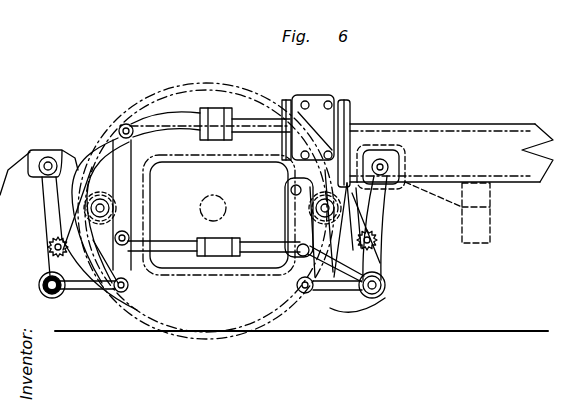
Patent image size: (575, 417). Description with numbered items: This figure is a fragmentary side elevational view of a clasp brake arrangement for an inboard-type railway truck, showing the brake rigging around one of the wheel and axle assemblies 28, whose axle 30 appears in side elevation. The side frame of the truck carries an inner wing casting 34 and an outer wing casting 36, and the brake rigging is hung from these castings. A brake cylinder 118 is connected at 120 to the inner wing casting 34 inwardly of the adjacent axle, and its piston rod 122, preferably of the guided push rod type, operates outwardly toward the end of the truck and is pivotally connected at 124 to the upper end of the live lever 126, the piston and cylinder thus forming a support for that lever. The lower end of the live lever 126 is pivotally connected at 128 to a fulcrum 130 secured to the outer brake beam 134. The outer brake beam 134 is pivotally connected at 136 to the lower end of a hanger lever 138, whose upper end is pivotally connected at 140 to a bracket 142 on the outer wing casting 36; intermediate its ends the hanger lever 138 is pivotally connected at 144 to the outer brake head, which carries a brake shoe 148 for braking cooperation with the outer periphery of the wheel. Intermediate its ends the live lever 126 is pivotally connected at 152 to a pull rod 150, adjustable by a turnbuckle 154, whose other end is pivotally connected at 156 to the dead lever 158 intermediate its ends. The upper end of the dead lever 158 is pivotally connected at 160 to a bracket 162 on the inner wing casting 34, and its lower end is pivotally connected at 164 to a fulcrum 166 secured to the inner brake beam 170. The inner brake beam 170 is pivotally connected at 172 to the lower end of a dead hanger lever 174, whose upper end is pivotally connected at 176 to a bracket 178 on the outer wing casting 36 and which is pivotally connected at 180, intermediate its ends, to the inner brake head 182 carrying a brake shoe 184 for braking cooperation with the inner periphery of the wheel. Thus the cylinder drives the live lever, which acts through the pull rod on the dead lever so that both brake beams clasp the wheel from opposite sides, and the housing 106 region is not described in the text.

The wheel and axle assembly 28 is at (212, 325).
The axle 30 is at (201, 201).
The inner wing casting 34 is at (192, 112).
The outer wing casting 36 is at (204, 107).
The frame 106 is at (82, 187).
The brake cylinder 118 is at (315, 96).
The connection of brake cylinder 120 is at (341, 100).
The piston rod 122 is at (240, 118).
The pivotal connection of piston rod 124 is at (132, 126).
The live lever 126 is at (115, 148).
The pivotal connection of live lever 128 is at (140, 312).
The fulcrum 130 is at (100, 292).
The outer brake beam 134 is at (60, 300).
The pivotal connection of outer brake beam 136 is at (60, 294).
The hanger lever 138 is at (43, 196).
The pivotal connection of hanger lever 140 is at (50, 148).
The bracket 142 is at (28, 148).
The pivotal connection of hanger lever to brake head 144 is at (50, 240).
The brake shoe 148 is at (130, 246).
The pull rod 150 is at (245, 256).
The pivotal connection of pull rod 152 is at (193, 240).
The turnbuckle 154 is at (219, 258).
The pivotal connection of pull rod to dead lever 156 is at (291, 262).
The dead lever 158 is at (297, 215).
The pivotal connection of dead lever 160 is at (290, 191).
The bracket 162 is at (258, 176).
The pivotal connection of dead lever to fulcrum 164 is at (305, 294).
The fulcrum 166 is at (384, 300).
The inner brake beam 170 is at (386, 285).
The pivotal connection of inner brake beam 172 is at (385, 272).
The dead hanger lever 174 is at (373, 200).
The pivotal connection of dead hanger lever 176 is at (382, 160).
The bracket 178 is at (403, 152).
The pivotal connection of dead hanger lever to brake head 180 is at (376, 226).
The inner brake head 182 is at (378, 243).
The brake shoe 184 is at (340, 293).